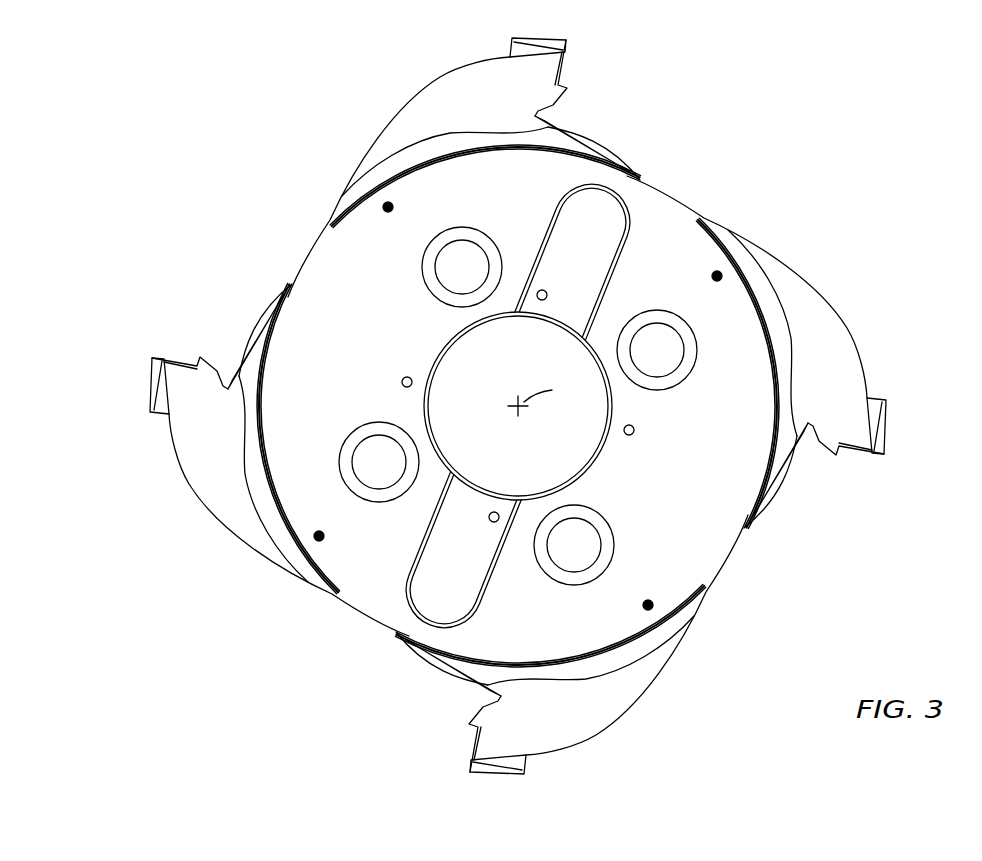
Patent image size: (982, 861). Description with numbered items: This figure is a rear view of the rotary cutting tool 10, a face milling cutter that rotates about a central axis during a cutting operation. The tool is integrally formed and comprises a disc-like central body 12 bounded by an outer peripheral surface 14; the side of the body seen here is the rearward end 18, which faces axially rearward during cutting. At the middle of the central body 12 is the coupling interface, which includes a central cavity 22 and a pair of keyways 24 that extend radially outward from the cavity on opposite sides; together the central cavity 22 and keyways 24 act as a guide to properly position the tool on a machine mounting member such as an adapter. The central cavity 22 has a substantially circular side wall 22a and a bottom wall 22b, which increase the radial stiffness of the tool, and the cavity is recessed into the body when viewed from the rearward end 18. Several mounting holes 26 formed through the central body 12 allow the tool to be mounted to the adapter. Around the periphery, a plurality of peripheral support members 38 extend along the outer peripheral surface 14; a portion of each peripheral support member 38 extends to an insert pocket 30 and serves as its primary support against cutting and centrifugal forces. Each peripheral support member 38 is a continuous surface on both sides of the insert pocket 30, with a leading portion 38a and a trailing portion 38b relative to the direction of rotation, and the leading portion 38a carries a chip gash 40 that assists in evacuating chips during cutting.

The rotary cutting tool 10 is at (869, 143).
The central body 12 is at (706, 518).
The outer peripheral surface 14 is at (375, 622).
The rearward end 18 is at (717, 462).
The central cavity 22 is at (455, 412).
The side wall 22a is at (455, 340).
The bottom wall 22b is at (518, 406).
The keyways 24 is at (582, 262).
The mounting holes 26 is at (450, 278).
The insert pocket 30 is at (576, 80).
The peripheral support member 38 is at (440, 78).
The leading portion 38a is at (590, 122).
The trailing portion 38b is at (400, 110).
The chip gash 40 is at (560, 108).